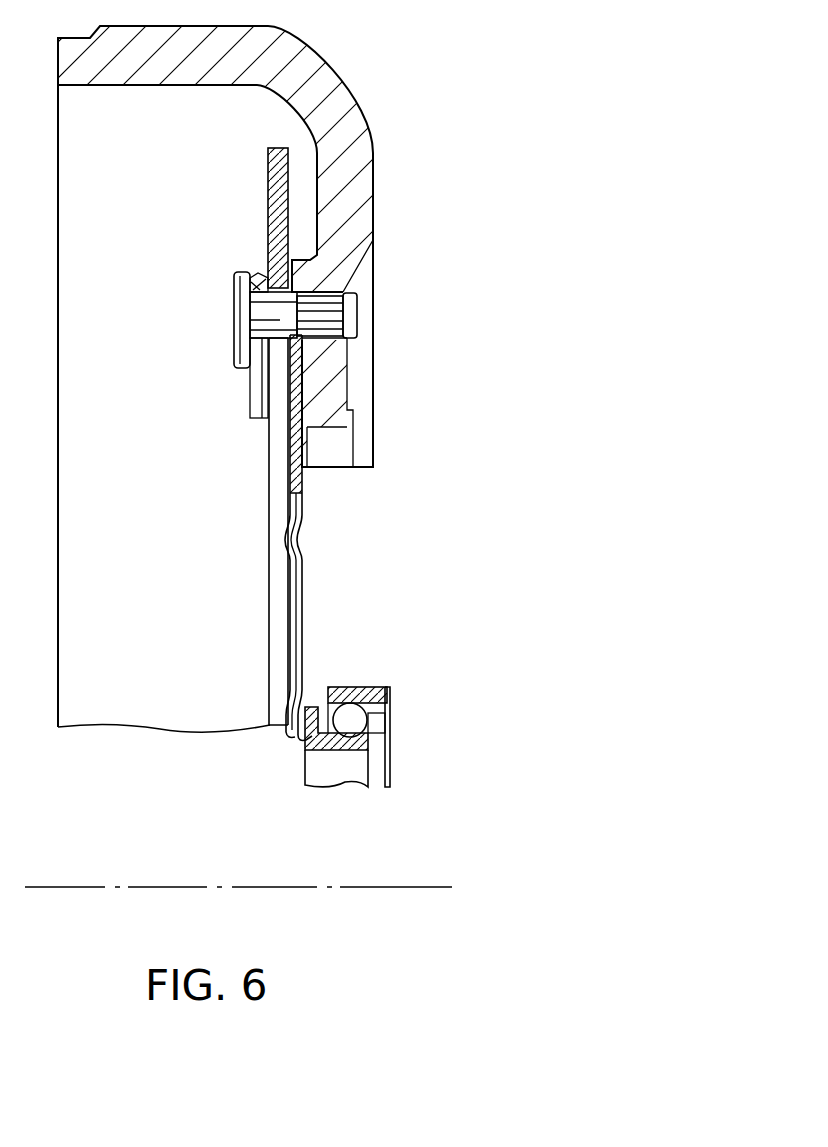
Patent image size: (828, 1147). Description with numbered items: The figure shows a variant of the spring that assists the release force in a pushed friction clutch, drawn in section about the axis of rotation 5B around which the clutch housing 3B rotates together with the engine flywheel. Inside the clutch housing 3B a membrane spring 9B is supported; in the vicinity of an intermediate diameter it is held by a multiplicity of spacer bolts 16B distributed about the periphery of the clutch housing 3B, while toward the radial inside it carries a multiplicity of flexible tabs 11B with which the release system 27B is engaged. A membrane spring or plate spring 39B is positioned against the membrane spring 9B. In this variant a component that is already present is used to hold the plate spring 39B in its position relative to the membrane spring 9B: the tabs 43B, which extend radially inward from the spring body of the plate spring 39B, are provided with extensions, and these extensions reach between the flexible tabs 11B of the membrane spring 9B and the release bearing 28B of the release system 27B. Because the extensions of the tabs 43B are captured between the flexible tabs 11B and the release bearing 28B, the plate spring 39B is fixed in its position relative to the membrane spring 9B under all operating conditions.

The clutch housing 3B is at (333, 96).
The membrane spring 9B is at (268, 170).
The spacer bolt 16B is at (340, 308).
The plate spring 39B is at (303, 372).
The flexible tab 11B is at (277, 633).
The tab 43B is at (297, 577).
The release bearing 28B is at (367, 687).
The release system 27B is at (403, 707).
The axis of rotation 5B is at (160, 885).